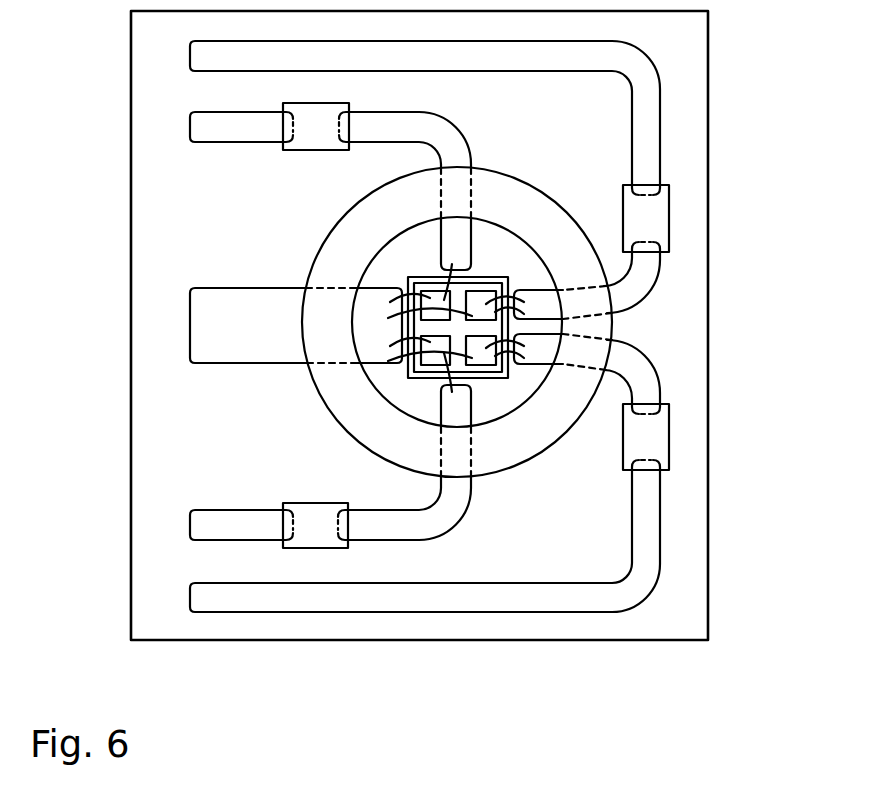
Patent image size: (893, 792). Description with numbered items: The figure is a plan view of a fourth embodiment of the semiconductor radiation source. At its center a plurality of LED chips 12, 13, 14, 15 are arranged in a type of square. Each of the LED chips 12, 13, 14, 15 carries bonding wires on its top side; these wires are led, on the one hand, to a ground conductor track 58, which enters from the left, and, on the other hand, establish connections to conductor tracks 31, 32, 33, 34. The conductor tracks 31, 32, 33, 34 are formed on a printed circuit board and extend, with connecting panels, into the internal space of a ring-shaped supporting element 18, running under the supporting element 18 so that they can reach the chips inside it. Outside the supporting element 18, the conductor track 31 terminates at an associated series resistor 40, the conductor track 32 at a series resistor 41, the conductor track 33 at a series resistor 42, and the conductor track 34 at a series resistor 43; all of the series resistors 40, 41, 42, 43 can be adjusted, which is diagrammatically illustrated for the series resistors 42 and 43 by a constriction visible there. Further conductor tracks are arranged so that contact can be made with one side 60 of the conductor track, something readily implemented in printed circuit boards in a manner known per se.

The LED chip 12 is at (443, 300).
The LED chip 13 is at (478, 298).
The LED chip 14 is at (440, 353).
The LED chip 15 is at (478, 353).
The supporting element 18 is at (528, 204).
The conductor track 31 is at (430, 132).
The conductor track 32 is at (650, 267).
The conductor track 33 is at (652, 388).
The conductor track 34 is at (430, 522).
The series resistor 40 is at (317, 138).
The series resistor 41 is at (653, 219).
The series resistor 42 is at (652, 436).
The series resistor 43 is at (317, 512).
The ground conductor track 58 is at (207, 298).
The side of the conductor track 60 is at (116, 560).